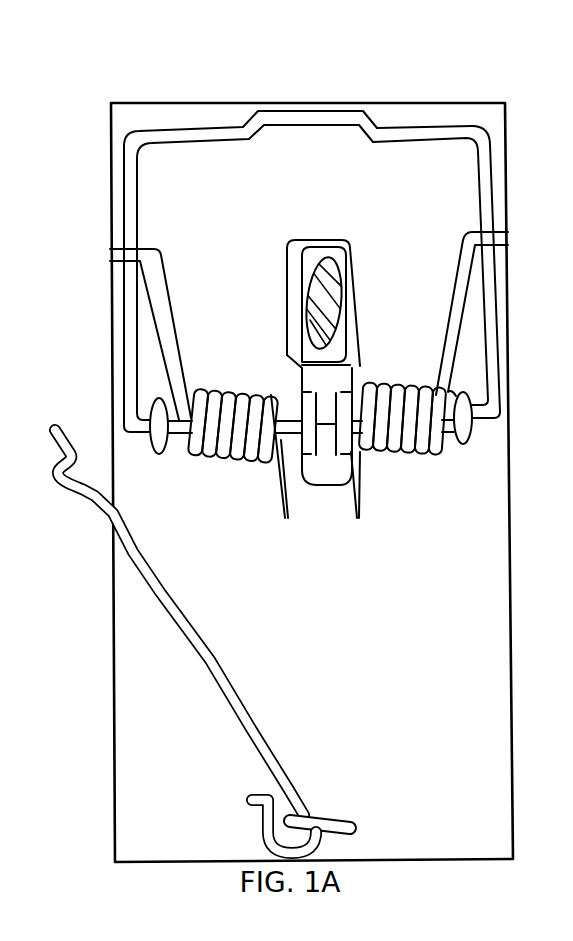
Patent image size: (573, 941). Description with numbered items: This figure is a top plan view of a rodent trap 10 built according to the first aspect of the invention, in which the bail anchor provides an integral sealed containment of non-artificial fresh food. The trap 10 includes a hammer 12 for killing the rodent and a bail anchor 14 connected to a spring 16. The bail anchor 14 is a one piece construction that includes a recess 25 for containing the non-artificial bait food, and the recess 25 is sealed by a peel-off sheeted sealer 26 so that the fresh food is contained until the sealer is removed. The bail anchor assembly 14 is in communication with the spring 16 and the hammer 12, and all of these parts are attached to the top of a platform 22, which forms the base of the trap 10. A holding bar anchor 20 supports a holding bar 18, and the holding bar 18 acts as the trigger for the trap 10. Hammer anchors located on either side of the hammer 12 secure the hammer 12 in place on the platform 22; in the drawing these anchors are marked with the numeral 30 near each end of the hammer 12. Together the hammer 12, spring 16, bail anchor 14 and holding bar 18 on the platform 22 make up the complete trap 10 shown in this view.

The rodent trap 10 is at (296, 80).
The hammer 12 is at (158, 140).
The bail anchor 14 is at (312, 358).
The spring 16 is at (150, 426).
The holding bar 18 is at (107, 525).
The holding bar anchor 20 is at (340, 829).
The platform 22 is at (158, 846).
The recess 25 is at (333, 240).
The peel-off sheeted sealer 26 is at (357, 266).
The staple clip 30 is at (150, 449).